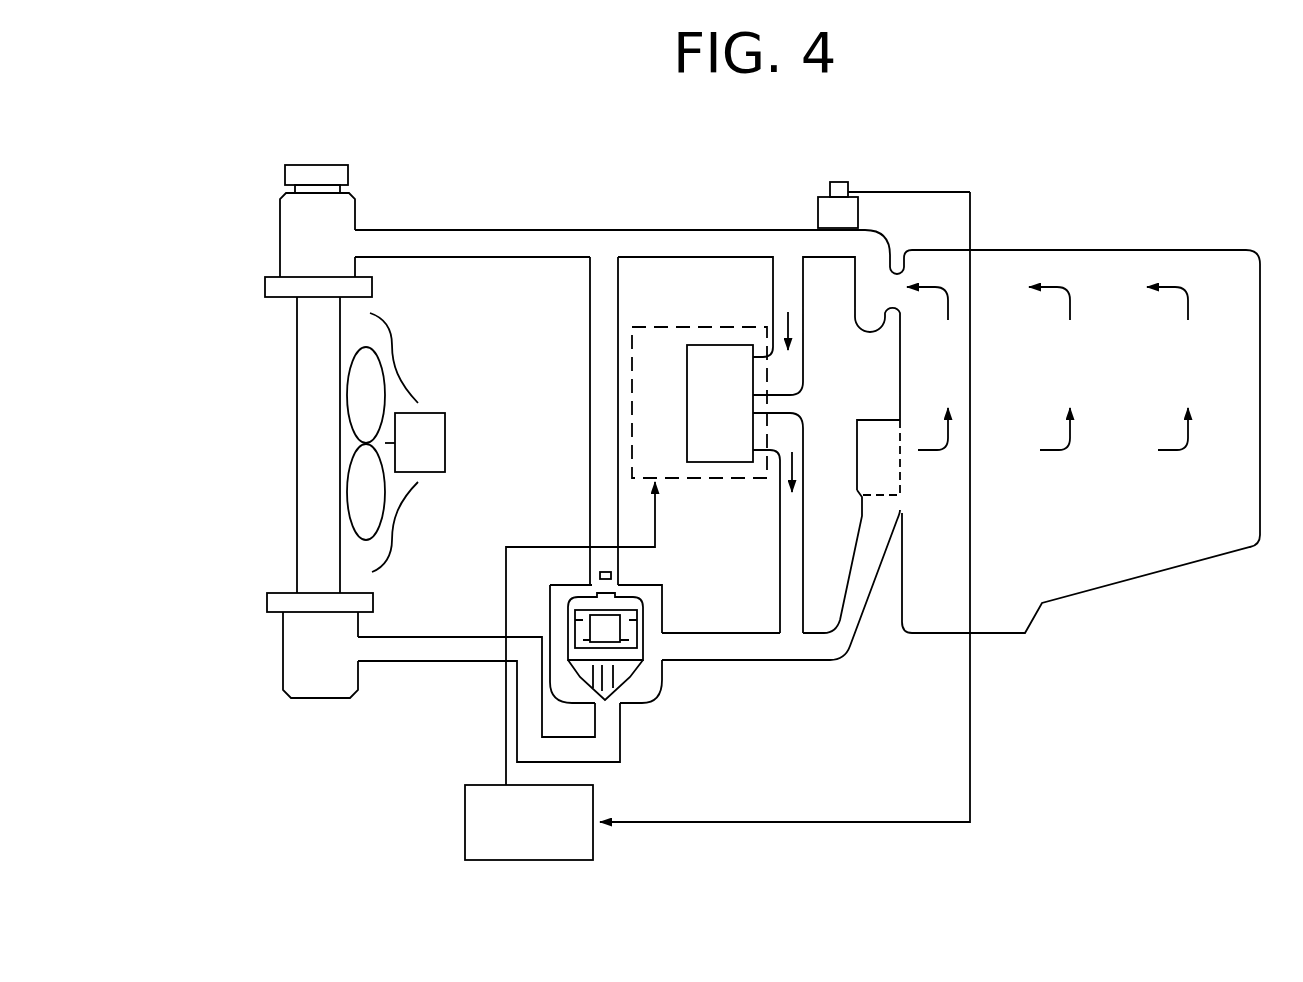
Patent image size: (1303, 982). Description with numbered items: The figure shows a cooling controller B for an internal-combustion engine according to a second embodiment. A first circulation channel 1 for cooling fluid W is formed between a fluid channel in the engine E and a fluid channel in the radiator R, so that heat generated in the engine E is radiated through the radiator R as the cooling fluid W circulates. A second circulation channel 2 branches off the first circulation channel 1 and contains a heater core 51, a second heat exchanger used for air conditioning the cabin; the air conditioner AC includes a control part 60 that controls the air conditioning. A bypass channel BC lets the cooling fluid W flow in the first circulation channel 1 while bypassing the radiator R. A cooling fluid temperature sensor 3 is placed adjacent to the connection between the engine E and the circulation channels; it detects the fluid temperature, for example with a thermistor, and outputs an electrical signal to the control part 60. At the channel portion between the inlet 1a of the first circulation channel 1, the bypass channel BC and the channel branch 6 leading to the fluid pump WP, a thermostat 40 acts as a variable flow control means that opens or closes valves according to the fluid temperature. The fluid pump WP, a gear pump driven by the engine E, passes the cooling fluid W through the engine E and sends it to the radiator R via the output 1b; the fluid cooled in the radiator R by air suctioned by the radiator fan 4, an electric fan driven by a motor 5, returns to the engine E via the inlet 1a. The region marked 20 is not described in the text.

The first circulation channel 1 is at (449, 231).
The inlet of the first circulation channel 1a is at (408, 648).
The output of the circulation channel 1b is at (563, 242).
The second circulation channel 2 is at (788, 585).
The cooling fluid temperature sensor 3 is at (838, 182).
The radiator fan 4 is at (357, 378).
The motor 5 is at (433, 433).
The channel branch 6 is at (678, 652).
The flow control valve 20 is at (665, 468).
The thermostat 40 is at (630, 688).
The heater core 51 is at (705, 343).
The control part 60 is at (462, 837).
The cooling controller B is at (624, 203).
The bypass channel BC is at (590, 402).
The air conditioner AC is at (740, 484).
The fluid pump WP is at (882, 425).
The radiator R is at (298, 440).
The engine E is at (1090, 249).
The cooling fluid W is at (538, 244).